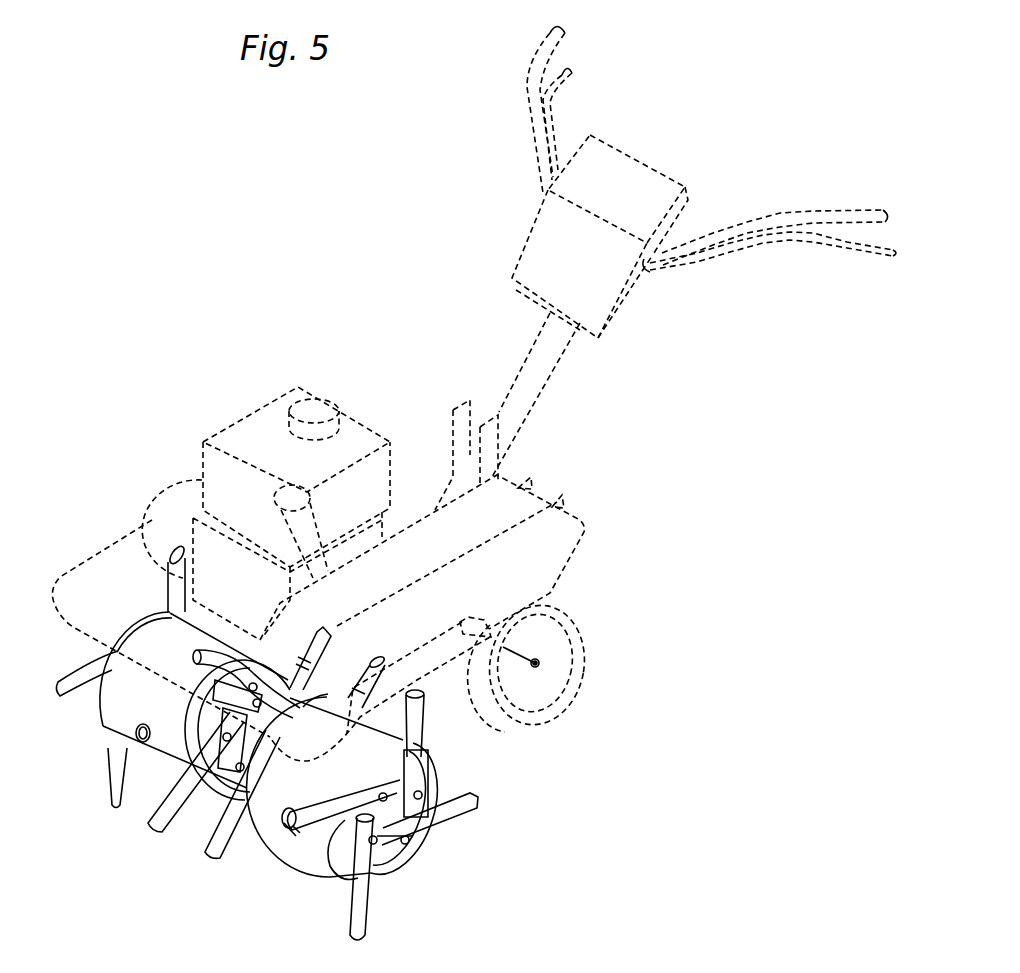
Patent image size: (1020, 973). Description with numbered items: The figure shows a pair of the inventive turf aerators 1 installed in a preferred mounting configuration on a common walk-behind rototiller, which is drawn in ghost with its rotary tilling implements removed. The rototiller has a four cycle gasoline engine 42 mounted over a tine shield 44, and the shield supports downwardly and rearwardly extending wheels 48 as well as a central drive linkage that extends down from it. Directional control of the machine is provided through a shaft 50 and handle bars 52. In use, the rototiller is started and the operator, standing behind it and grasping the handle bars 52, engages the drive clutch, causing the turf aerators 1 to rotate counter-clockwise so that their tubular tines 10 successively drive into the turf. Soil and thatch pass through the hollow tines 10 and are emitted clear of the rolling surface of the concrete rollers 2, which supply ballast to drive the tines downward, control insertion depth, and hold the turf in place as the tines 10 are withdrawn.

The turf aerator 1 is at (283, 758).
The roller 2 is at (120, 712).
The tubular tine 10 is at (467, 805).
The gasoline engine 42 is at (207, 540).
The tine shield 44 is at (138, 580).
The wheel 48 is at (543, 640).
The shaft 50 is at (520, 389).
The handle bars 52 is at (732, 222).